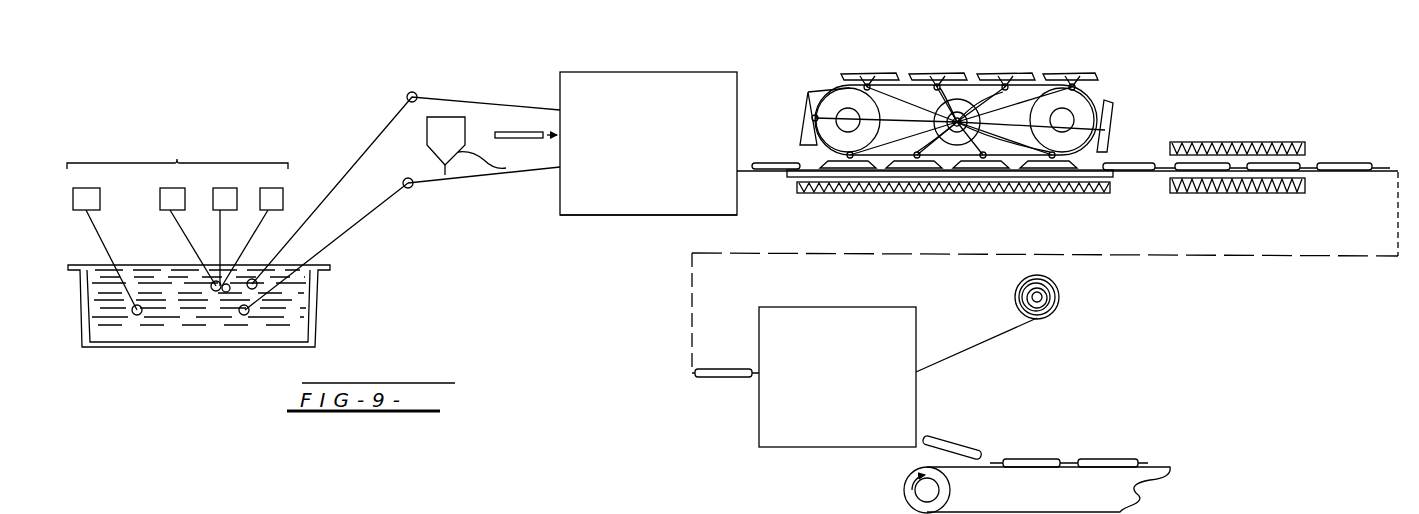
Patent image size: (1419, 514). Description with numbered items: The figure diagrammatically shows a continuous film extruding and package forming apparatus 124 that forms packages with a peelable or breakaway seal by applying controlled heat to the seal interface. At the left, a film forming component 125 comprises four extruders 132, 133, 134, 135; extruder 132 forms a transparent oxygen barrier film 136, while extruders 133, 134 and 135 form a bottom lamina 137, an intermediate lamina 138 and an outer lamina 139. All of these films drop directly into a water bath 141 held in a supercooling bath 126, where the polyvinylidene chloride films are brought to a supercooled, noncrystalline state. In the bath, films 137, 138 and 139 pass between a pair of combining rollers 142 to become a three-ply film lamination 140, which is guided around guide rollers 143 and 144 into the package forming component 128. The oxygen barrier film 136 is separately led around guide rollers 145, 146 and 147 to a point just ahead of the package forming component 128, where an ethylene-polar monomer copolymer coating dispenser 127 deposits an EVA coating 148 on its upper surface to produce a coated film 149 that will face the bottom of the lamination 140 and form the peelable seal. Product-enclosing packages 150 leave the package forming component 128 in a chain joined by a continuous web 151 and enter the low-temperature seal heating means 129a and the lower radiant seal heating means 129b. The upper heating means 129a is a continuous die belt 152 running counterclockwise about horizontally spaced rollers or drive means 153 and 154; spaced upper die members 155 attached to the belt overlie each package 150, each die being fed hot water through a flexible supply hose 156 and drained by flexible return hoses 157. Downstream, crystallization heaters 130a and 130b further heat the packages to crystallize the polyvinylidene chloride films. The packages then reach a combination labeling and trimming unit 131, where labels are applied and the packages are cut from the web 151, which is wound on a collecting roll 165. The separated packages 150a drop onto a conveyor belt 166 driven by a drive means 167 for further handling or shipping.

The continuous film extruding and package forming apparatus 124 is at (620, 66).
The film forming component 125 is at (177, 151).
The supercooling bath 126 is at (319, 282).
The ethylene-polar monomer copolymer coating dispenser 127 is at (496, 172).
The package forming component 128 is at (621, 210).
The low-temperature seal heating means 129a is at (1077, 73).
The lower radiant seal heating means 129b is at (1100, 195).
The polyvinylidene chloride crystallization heater 130a is at (1303, 141).
The polyvinylidene chloride crystallization heater 130b is at (1305, 188).
The combination labeling and trimming unit 131 is at (900, 313).
The film extruder 132 is at (98, 199).
The film extruder 133 is at (161, 199).
The film extruder 134 is at (226, 192).
The film extruder 135 is at (282, 198).
The oxygen barrier film 136 is at (104, 244).
The bottom lamina 137 is at (193, 246).
The intermediate lamina 138 is at (221, 250).
The outer lamina 139 is at (246, 254).
The film lamination 140 is at (509, 105).
The water bath 141 is at (213, 335).
The combining rollers 142 is at (212, 290).
The guide roller 143 is at (292, 246).
The guide roller 144 is at (416, 92).
The guide roller 145 is at (138, 316).
The guide roller 146 is at (249, 312).
The guide roller 147 is at (412, 188).
The ethylene-polar monomer copolymer coating 148 is at (462, 172).
The coated film 149 is at (540, 169).
The product-enclosing packages 150 is at (755, 165).
The separated packages 150a is at (953, 442).
The continuous web 151 is at (739, 170).
The die belt 152 is at (1005, 85).
The roller or drive means 153 is at (810, 110).
The roller or drive means 154 is at (1080, 110).
The upper die members 155 is at (867, 84).
The flexible supply hose 156 is at (815, 113).
The flexible return hoses 157 is at (843, 155).
The collecting roll 165 is at (1050, 301).
The conveyor belt 166 is at (995, 510).
The drive means 167 is at (908, 500).